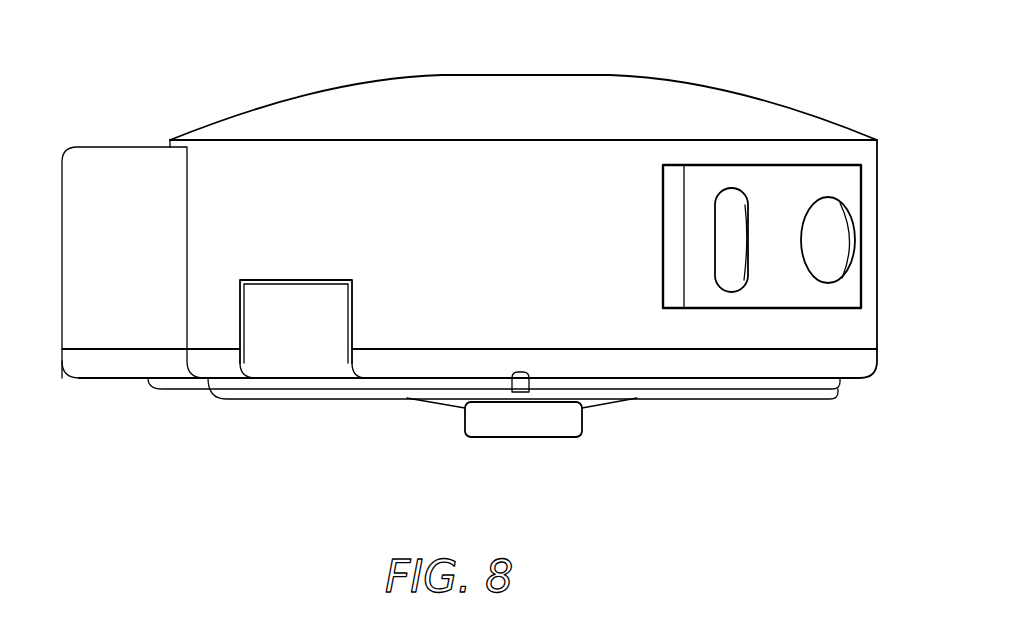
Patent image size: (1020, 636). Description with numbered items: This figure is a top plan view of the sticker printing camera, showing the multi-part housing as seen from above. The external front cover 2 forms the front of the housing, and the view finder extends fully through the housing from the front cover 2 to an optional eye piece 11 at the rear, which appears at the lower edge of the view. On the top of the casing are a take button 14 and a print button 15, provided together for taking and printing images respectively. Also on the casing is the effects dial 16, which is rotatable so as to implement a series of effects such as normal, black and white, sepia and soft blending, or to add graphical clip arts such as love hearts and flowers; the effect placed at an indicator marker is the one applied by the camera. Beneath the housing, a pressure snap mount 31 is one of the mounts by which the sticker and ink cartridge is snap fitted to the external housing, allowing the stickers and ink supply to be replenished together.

The external front cover 2 is at (525, 90).
The eye piece 11 is at (584, 427).
The take button 14 is at (728, 213).
The print button 15 is at (837, 222).
The effects dial 16 is at (345, 400).
The pressure snap mount 31 is at (292, 337).